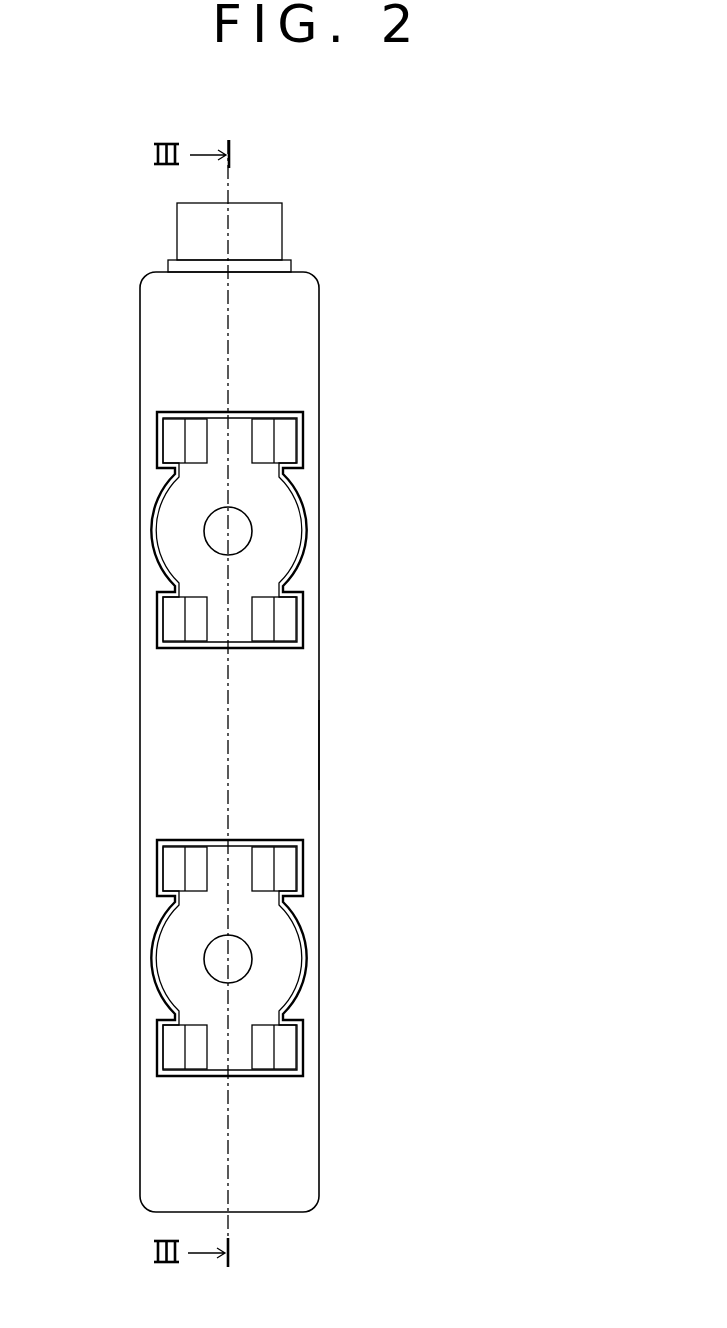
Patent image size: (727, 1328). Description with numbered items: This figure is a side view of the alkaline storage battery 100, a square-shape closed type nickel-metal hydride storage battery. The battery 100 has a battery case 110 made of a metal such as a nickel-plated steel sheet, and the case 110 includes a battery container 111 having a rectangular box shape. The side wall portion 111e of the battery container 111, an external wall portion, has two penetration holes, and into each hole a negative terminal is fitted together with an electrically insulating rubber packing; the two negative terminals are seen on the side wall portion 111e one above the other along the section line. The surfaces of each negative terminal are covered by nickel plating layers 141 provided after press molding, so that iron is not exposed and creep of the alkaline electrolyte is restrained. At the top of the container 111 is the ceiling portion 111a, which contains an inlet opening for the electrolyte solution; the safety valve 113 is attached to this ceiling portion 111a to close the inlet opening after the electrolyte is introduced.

The alkaline storage battery 100 is at (360, 254).
The battery case 110 is at (140, 343).
The battery container 111 is at (300, 352).
The ceiling portion 111a is at (158, 270).
The side wall portion 111e is at (292, 733).
The safety valve 113 is at (268, 232).
The nickel plating layer 141 is at (240, 512).